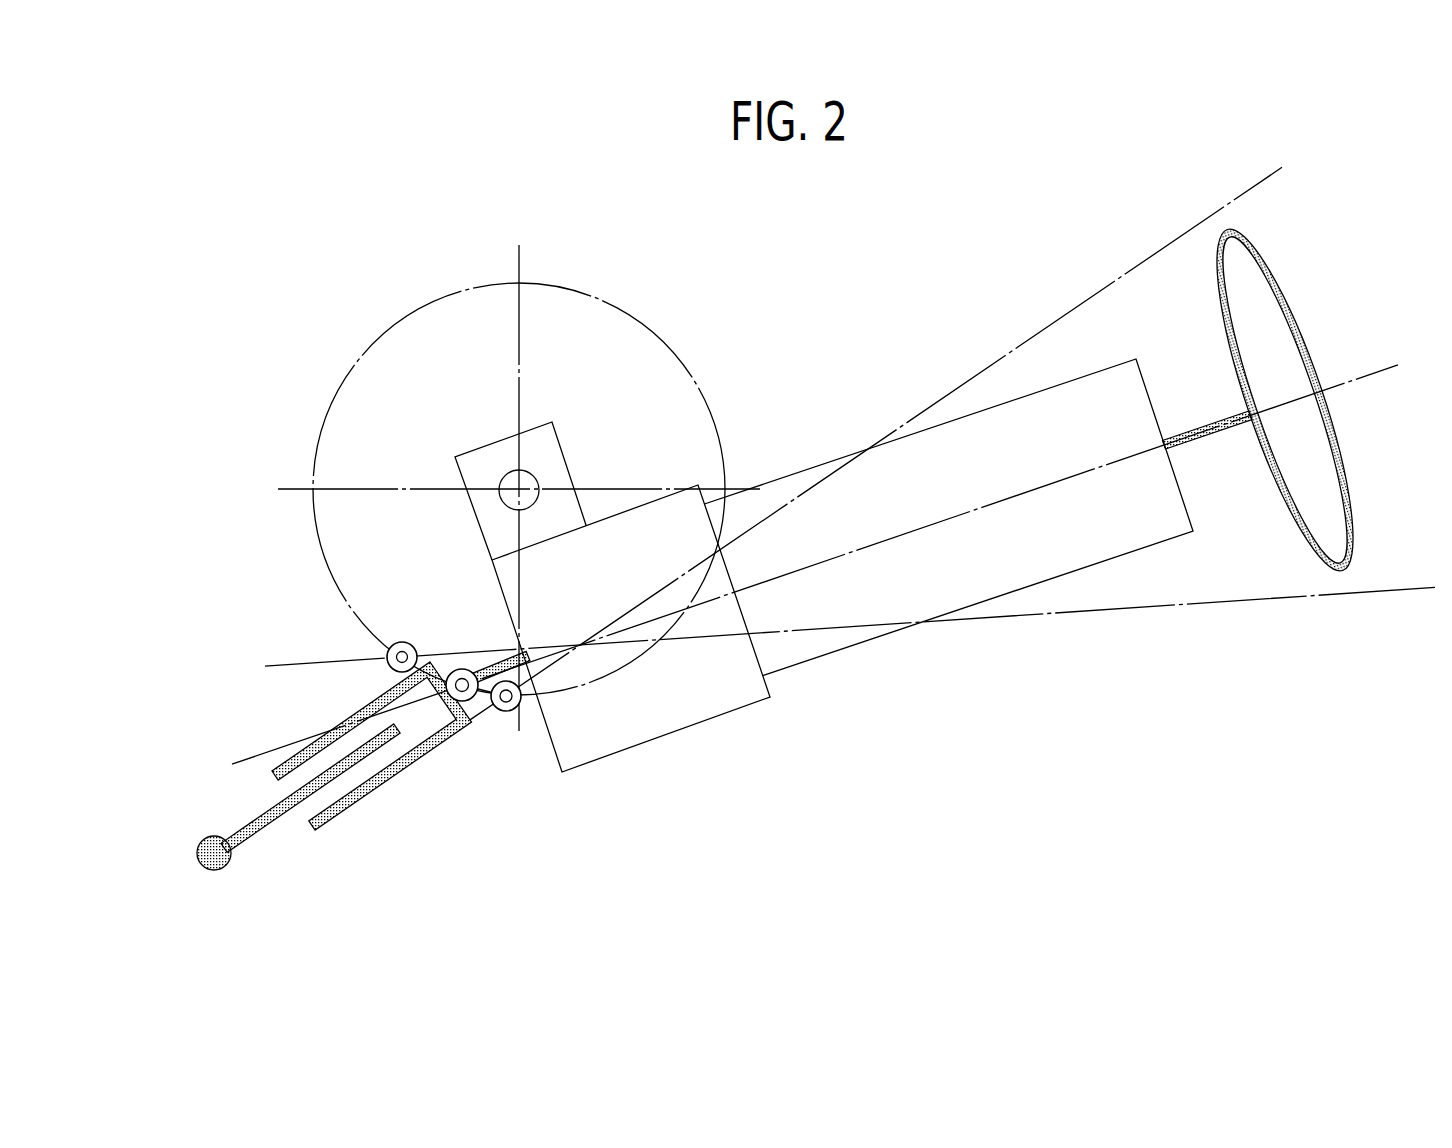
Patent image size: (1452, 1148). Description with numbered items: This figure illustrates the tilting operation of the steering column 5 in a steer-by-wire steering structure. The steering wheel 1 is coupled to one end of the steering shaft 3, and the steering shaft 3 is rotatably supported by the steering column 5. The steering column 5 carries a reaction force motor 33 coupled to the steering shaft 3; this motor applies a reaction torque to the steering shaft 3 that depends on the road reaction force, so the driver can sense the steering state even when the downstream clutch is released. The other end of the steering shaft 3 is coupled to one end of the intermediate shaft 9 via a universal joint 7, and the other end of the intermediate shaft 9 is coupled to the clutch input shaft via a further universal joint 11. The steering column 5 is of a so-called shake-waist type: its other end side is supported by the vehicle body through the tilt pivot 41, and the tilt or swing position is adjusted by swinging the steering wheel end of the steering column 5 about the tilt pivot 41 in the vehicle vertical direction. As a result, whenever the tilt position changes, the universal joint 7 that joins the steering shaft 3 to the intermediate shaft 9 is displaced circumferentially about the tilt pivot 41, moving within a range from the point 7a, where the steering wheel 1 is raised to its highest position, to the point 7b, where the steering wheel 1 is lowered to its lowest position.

The steering wheel 1 is at (1280, 289).
The steering shaft 3 is at (1206, 430).
The steering column 5 is at (807, 470).
The universal joint 7 is at (460, 670).
The point 7a is at (506, 711).
The point 7b is at (388, 652).
The intermediate shaft 9 is at (347, 816).
The universal joint 11 is at (210, 838).
The reaction force motor 33 is at (704, 706).
The tilt pivot 41 is at (528, 478).